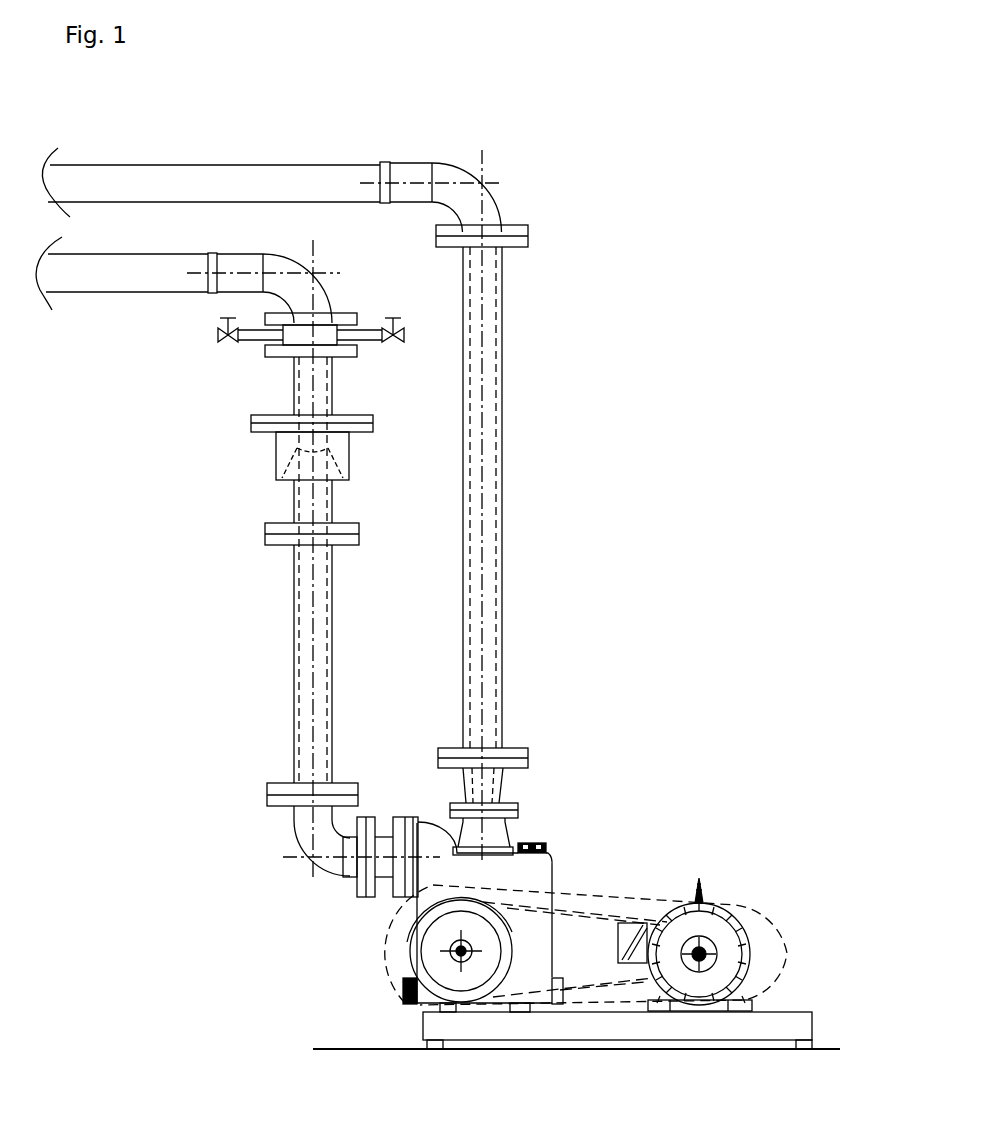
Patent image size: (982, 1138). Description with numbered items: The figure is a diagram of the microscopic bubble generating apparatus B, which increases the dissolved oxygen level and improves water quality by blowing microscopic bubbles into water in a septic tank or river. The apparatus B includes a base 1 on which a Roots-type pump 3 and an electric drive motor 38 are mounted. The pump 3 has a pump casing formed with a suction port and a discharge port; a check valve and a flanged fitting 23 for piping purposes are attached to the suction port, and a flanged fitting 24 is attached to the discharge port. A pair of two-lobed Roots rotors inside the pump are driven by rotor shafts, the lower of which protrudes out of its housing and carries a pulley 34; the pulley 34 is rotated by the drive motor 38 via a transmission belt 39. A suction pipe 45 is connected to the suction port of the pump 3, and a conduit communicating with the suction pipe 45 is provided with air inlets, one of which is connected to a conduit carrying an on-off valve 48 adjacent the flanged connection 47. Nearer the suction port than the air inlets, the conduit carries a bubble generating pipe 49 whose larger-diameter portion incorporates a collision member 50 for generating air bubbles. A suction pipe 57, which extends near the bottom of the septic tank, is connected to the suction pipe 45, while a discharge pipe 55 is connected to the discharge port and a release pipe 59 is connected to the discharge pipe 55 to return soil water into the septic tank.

The base 1 is at (790, 1012).
The Roots-type pump 3 is at (537, 868).
The flanged fitting 23 is at (393, 880).
The flanged fitting 24 is at (500, 835).
The pulley 34 is at (403, 965).
The drive motor 38 is at (680, 917).
The transmission belt 39 is at (588, 917).
The suction pipe 45 is at (304, 599).
The flange joint 47 is at (254, 337).
The on-off valve 48 is at (218, 333).
The bubble generating pipe 49 is at (277, 444).
The collision member 50 is at (292, 457).
The discharge pipe 55 is at (490, 331).
The suction pipe 57 is at (107, 286).
The release pipe 59 is at (160, 167).
The microscopic bubble generating apparatus B is at (737, 892).